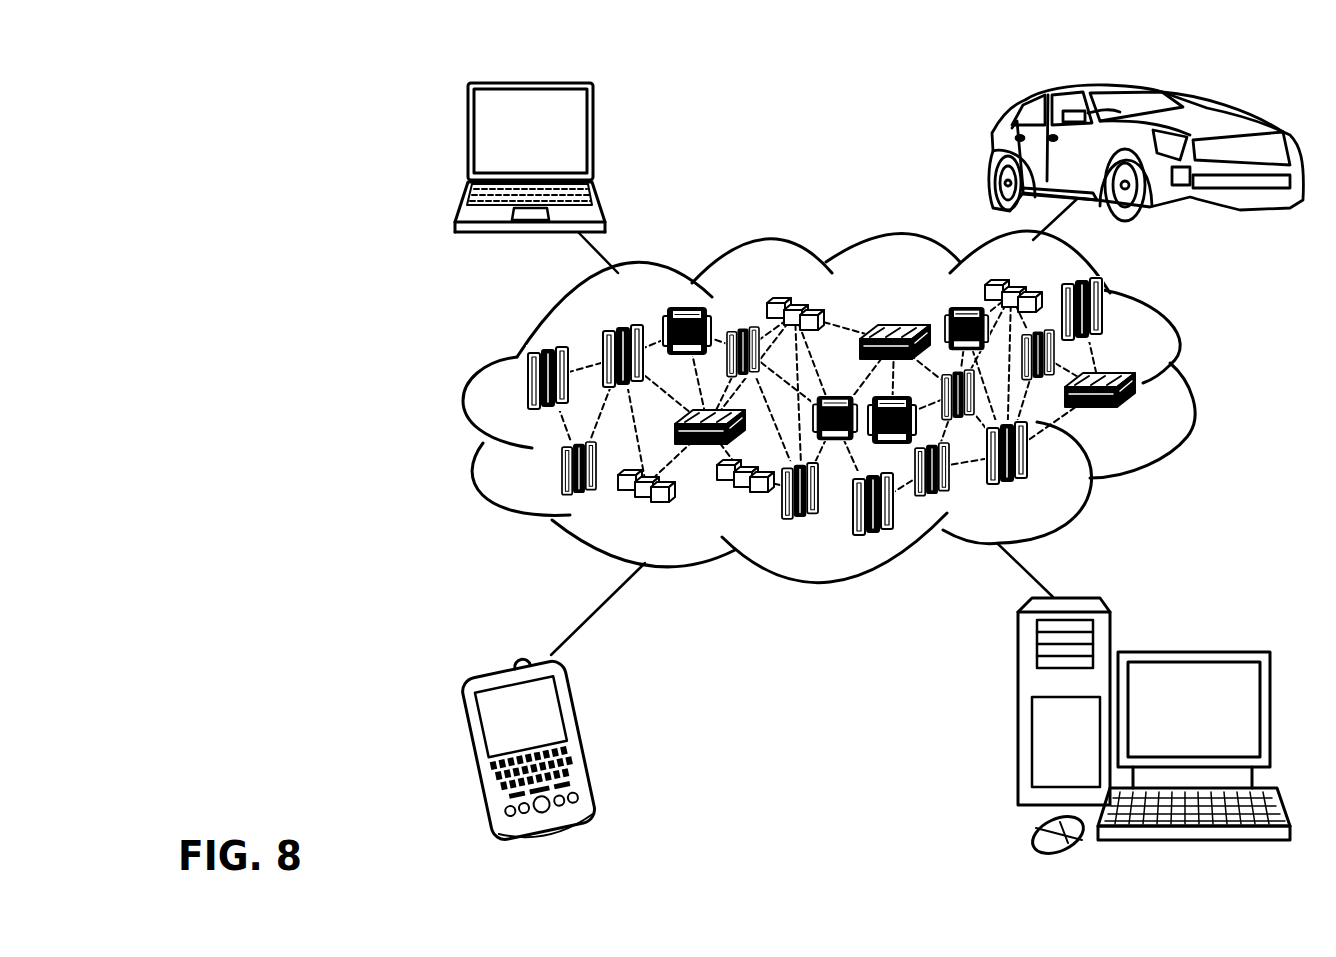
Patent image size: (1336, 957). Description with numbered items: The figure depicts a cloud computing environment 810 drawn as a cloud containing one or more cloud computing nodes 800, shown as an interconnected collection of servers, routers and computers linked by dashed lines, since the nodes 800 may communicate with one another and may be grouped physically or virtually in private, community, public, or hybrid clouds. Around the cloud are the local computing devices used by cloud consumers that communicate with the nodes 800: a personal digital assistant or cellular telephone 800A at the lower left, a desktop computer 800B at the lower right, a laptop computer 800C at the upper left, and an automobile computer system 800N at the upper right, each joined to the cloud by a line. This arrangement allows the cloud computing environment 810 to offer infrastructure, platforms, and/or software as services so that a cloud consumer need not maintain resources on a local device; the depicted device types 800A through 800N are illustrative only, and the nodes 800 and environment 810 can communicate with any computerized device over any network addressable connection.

The cloud computing nodes 800 is at (213, 82).
The cloud computing environment 810 is at (1187, 388).
The personal digital assistant (PDA) or cellular telephone 800A is at (583, 737).
The desktop computer 800B is at (1190, 652).
The laptop computer 800C is at (593, 141).
The automobile computer system 800N is at (990, 157).